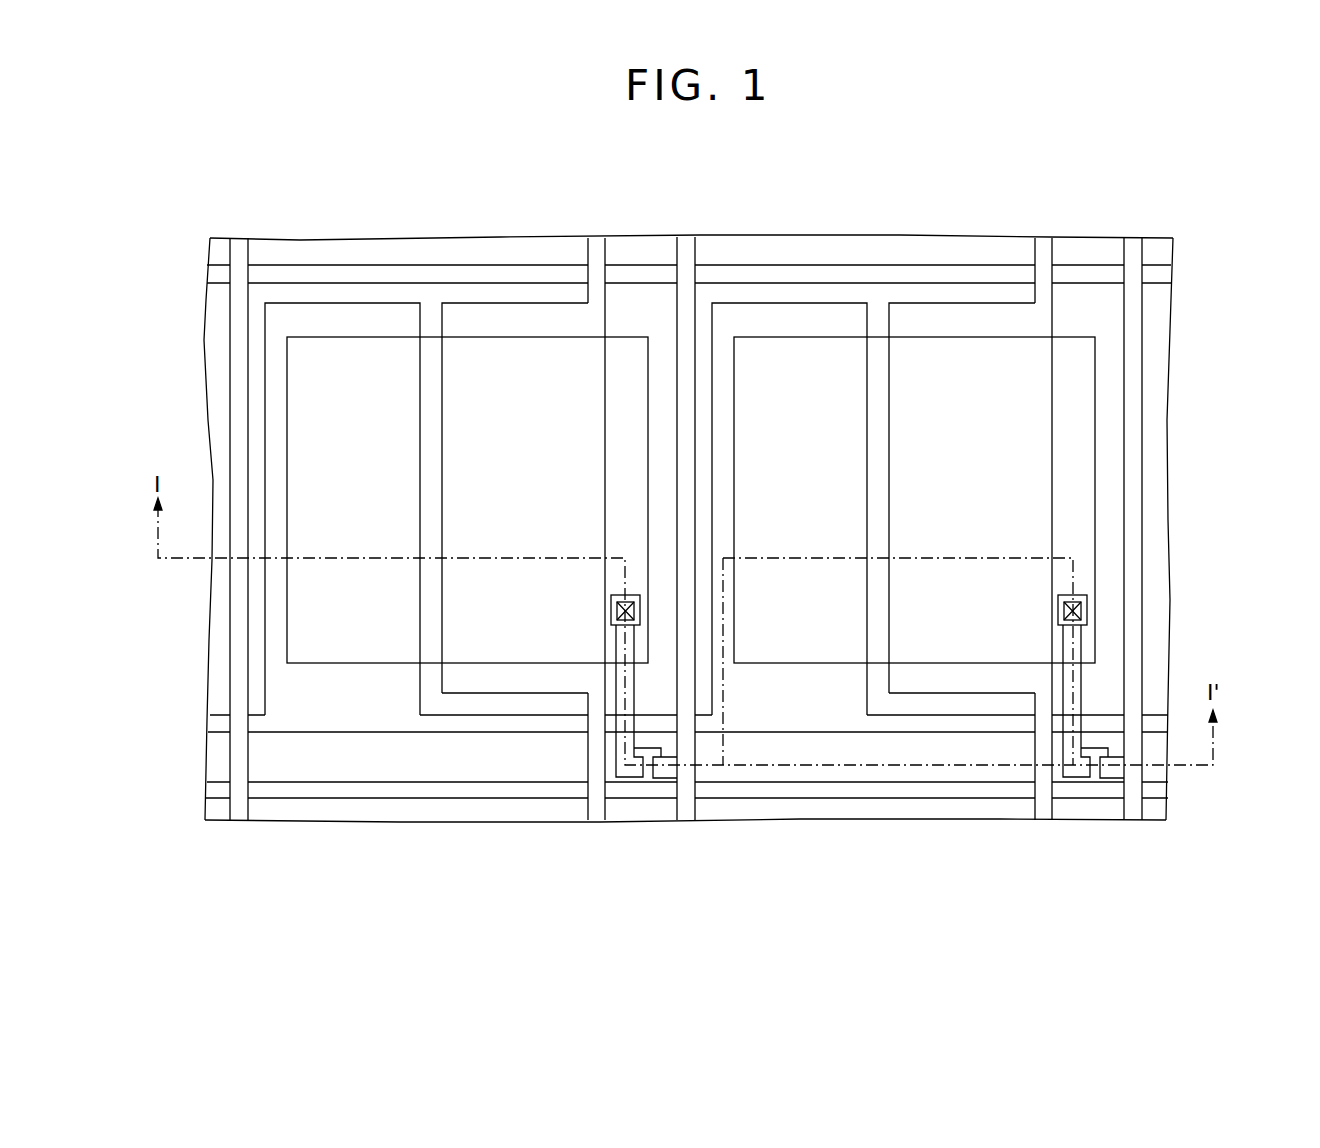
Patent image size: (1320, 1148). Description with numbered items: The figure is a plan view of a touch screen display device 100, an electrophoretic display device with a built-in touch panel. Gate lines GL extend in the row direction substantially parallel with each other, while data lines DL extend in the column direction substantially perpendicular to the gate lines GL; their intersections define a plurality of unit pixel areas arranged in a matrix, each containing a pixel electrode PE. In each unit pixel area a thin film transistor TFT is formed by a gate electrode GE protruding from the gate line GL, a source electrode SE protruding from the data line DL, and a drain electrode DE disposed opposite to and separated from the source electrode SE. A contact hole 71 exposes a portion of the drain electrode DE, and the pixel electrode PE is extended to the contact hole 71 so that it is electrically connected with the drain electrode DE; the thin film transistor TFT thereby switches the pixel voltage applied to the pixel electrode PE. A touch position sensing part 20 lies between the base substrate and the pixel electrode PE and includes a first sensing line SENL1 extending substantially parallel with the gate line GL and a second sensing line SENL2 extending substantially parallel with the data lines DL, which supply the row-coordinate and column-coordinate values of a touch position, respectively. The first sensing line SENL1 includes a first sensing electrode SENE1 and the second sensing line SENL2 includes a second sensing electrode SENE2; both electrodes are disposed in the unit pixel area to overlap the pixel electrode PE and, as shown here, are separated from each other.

The touch screen display device 100 is at (702, 181).
The pixel electrode PE is at (1095, 445).
The data line DL is at (1132, 520).
The contact hole 71 is at (1087, 607).
The first sensing electrode SENE1 is at (340, 687).
The second sensing electrode SENE2 is at (512, 677).
The gate line GL is at (780, 790).
The first sensing line SENL1 is at (905, 723).
The second sensing line SENL2 is at (1032, 750).
The touch position sensing part 20 is at (1020, 896).
The drain electrode DE is at (1072, 779).
The gate electrode GE is at (1097, 777).
The source electrode SE is at (1112, 773).
The thin film transistor TFT is at (1180, 896).